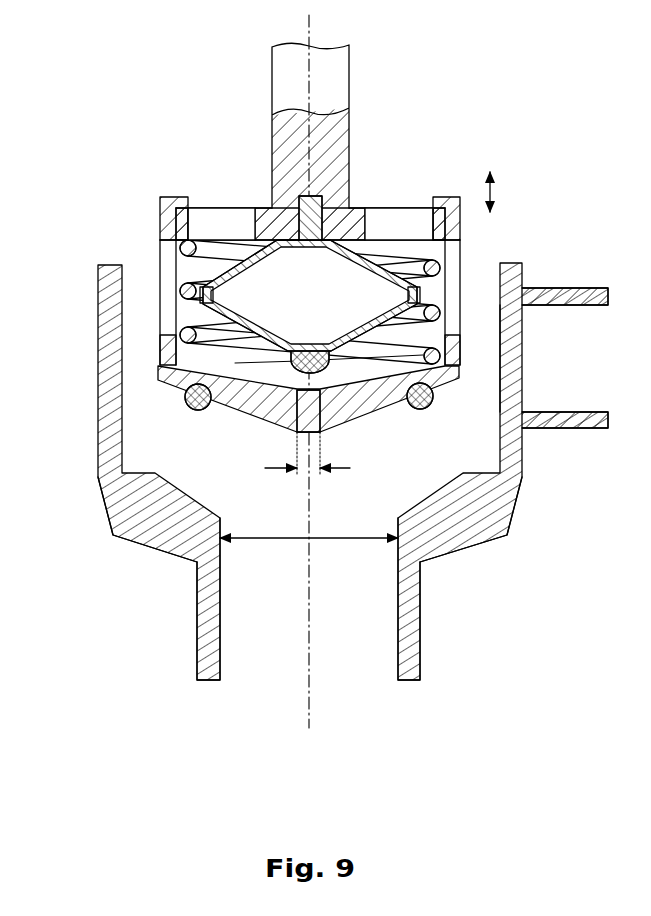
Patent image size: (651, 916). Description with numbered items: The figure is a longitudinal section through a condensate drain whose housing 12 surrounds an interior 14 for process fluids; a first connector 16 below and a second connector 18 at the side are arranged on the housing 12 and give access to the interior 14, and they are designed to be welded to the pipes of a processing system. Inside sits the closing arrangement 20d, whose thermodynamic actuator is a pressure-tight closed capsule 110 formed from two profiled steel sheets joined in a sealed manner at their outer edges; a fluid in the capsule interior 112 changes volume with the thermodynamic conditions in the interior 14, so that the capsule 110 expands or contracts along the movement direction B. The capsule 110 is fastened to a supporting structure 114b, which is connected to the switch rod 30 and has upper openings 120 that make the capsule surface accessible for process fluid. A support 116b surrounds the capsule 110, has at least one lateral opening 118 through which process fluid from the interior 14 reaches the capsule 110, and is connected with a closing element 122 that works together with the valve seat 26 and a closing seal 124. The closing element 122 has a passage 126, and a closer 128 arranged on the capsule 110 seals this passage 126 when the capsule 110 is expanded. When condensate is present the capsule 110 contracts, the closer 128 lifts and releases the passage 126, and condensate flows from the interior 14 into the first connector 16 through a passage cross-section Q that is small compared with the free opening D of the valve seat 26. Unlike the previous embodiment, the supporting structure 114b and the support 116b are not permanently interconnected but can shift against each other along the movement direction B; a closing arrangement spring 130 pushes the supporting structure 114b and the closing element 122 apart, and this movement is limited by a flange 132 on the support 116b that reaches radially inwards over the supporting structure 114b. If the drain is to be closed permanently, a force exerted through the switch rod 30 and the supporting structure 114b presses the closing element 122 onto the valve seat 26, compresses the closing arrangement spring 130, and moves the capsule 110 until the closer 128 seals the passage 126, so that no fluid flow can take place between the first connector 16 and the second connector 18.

The housing 12 is at (112, 435).
The interior 14 is at (487, 414).
The first connector 16 is at (197, 640).
The second connector 18 is at (549, 296).
The closing arrangement 20d is at (195, 145).
The valve seat 26 is at (438, 497).
The switch rod 30 is at (340, 103).
The capsule 110 is at (185, 263).
The capsule interior 112 is at (312, 306).
The supporting structure 114b is at (182, 213).
The support 116b is at (178, 218).
The lateral opening 118 is at (170, 297).
The upper openings 120 is at (233, 218).
The closing element 122 is at (230, 410).
The closing seal 124 is at (188, 398).
The passage 126 is at (328, 408).
The closer 128 is at (340, 362).
The closing arrangement spring 130 is at (172, 340).
The flange 132 is at (438, 205).
The movement direction B is at (492, 181).
The passage cross-section Q is at (307, 467).
The free opening of the valve seat D is at (309, 554).